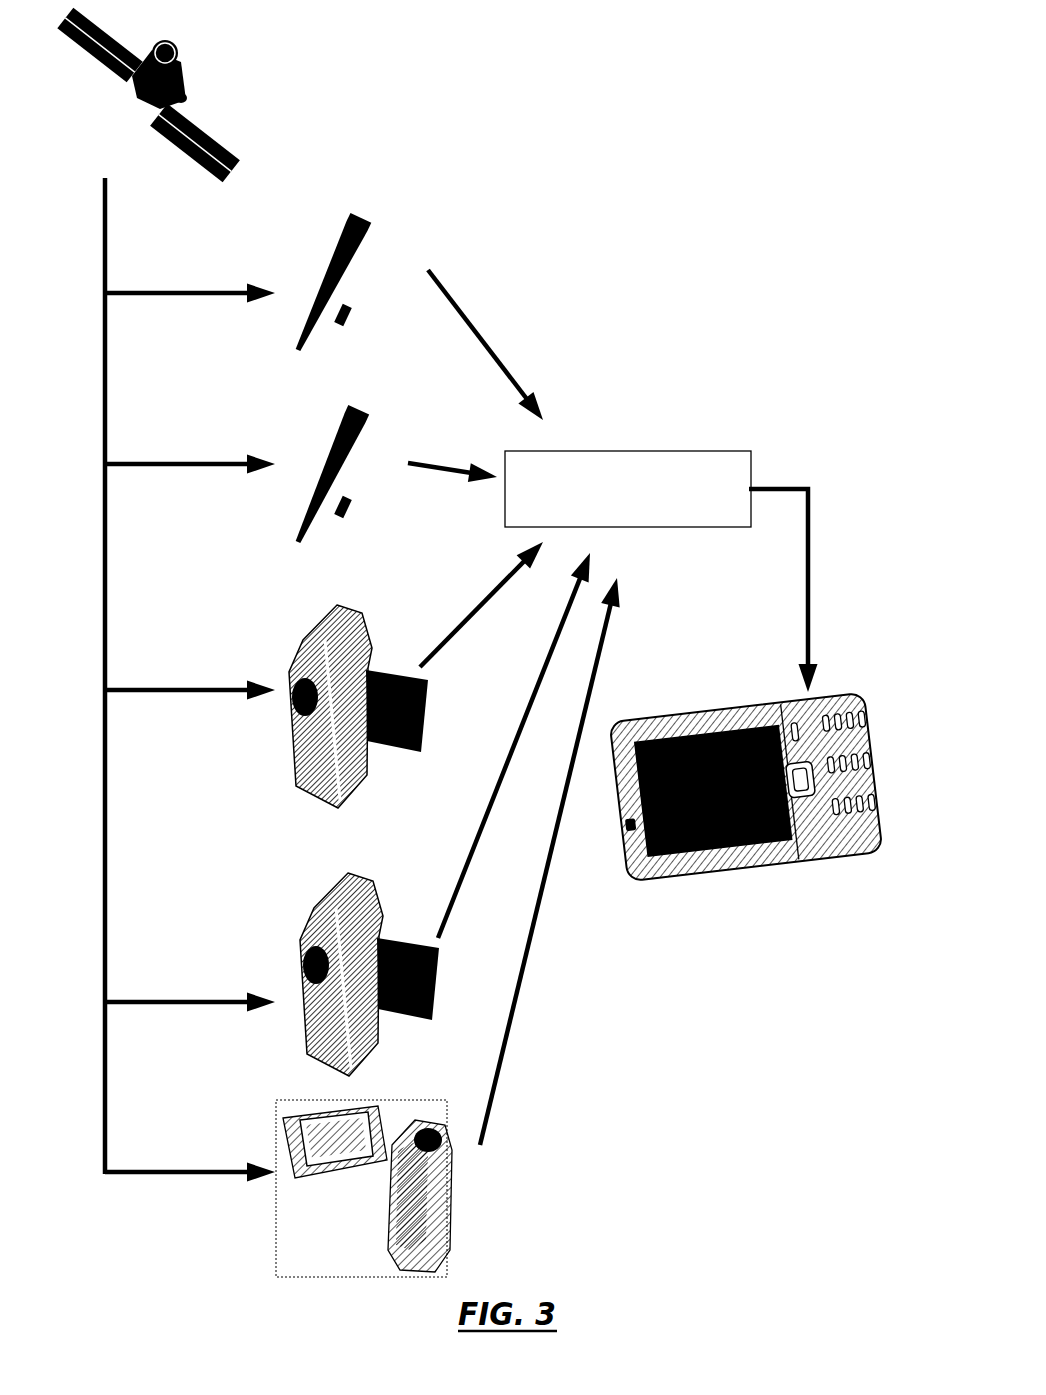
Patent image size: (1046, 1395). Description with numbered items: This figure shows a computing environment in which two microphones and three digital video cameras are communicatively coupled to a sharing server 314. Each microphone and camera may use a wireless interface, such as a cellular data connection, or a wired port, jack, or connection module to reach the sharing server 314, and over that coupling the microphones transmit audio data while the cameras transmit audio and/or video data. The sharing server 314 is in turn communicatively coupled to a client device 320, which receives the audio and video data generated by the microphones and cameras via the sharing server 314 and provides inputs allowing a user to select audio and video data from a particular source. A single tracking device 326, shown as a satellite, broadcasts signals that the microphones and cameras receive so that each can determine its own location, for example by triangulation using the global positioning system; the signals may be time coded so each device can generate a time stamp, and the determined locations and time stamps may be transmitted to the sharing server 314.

The tracking device 326 is at (218, 108).
The sharing server 314 is at (628, 450).
The client device 320 is at (685, 883).